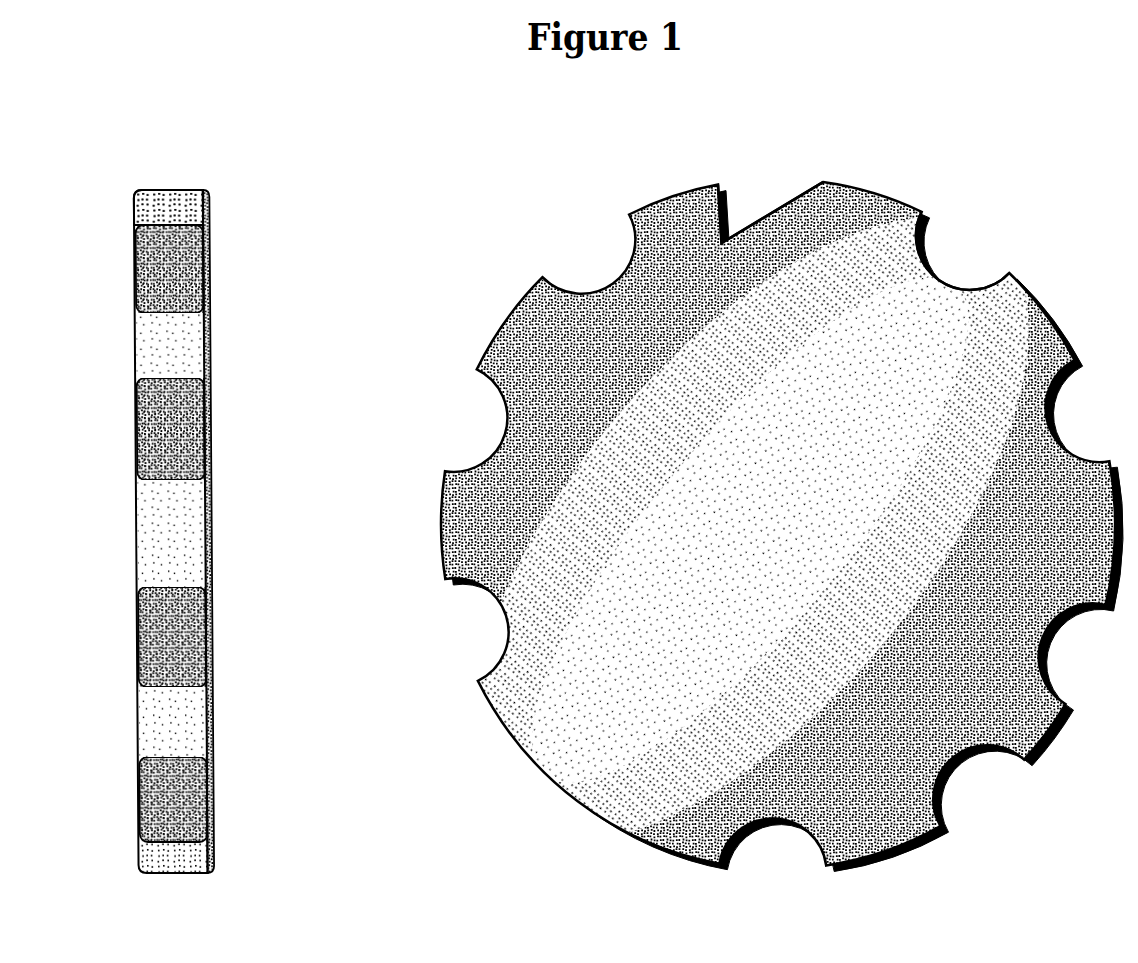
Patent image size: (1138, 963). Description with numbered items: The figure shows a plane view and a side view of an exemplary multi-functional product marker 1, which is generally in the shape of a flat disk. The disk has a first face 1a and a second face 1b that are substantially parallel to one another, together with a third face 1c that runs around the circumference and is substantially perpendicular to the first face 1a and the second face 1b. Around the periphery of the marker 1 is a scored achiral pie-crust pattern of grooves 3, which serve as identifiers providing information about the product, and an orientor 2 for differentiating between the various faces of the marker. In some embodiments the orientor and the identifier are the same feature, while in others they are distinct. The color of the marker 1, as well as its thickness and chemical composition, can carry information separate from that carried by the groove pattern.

The multi-functional product marker 1 is at (933, 397).
The orientor 2 is at (749, 192).
The identifiers 3 is at (960, 253).
The first face 1a is at (127, 340).
The second face 1b is at (216, 340).
The third face 1c is at (167, 178).